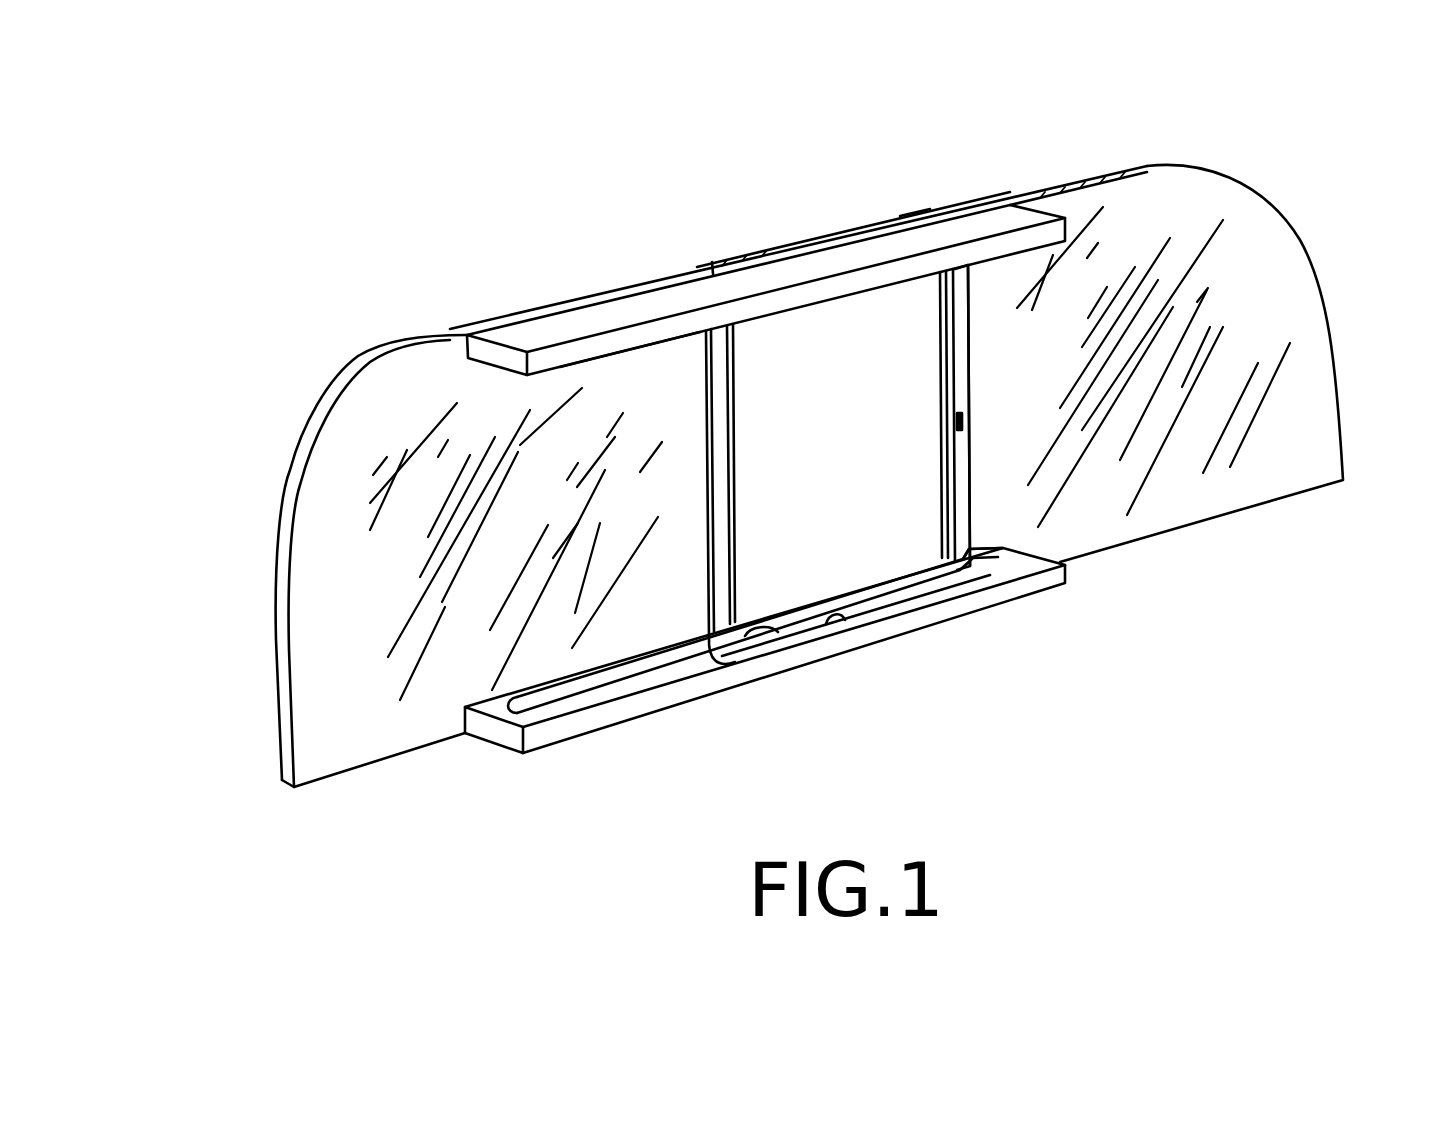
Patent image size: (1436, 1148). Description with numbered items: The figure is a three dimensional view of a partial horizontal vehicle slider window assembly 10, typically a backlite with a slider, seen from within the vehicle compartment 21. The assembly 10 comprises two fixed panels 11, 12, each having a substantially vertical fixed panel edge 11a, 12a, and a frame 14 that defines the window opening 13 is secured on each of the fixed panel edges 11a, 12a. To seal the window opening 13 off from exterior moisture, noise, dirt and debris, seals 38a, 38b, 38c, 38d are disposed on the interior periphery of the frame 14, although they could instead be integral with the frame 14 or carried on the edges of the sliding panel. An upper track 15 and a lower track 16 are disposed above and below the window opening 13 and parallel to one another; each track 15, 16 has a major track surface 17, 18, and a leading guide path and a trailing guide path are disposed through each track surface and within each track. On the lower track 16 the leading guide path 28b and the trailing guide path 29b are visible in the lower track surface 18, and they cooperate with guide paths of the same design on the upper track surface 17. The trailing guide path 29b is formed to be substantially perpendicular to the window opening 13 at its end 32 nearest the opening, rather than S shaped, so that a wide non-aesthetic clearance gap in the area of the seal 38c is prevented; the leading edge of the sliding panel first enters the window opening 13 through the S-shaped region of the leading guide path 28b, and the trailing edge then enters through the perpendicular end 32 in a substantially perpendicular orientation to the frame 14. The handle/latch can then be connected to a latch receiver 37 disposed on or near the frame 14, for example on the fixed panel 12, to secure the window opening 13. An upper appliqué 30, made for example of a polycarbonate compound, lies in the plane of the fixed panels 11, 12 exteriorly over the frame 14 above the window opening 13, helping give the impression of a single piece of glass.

The horizontal vehicle slider window assembly 10 is at (487, 175).
The fixed panel 11 is at (348, 497).
The fixed panel edge 11a is at (707, 258).
The fixed panel 12 is at (1230, 227).
The fixed panel edge 12a is at (948, 212).
The window opening 13 is at (867, 468).
The frame 14 is at (782, 253).
The upper track 15 is at (487, 350).
The lower track 16 is at (690, 688).
The major track surface 17 is at (580, 350).
The major track surface 18 is at (986, 580).
The vehicle compartment 21 is at (1025, 803).
The leading guide path 28b is at (836, 612).
The trailing guide path 29b is at (587, 678).
The upper appliqué 30 is at (826, 240).
The end of trailing guide path 32 is at (765, 627).
The latch receiver 37 is at (962, 421).
The seal 38a is at (950, 334).
The seal 38b is at (914, 243).
The seal 38c is at (728, 565).
The seal 38d is at (884, 578).